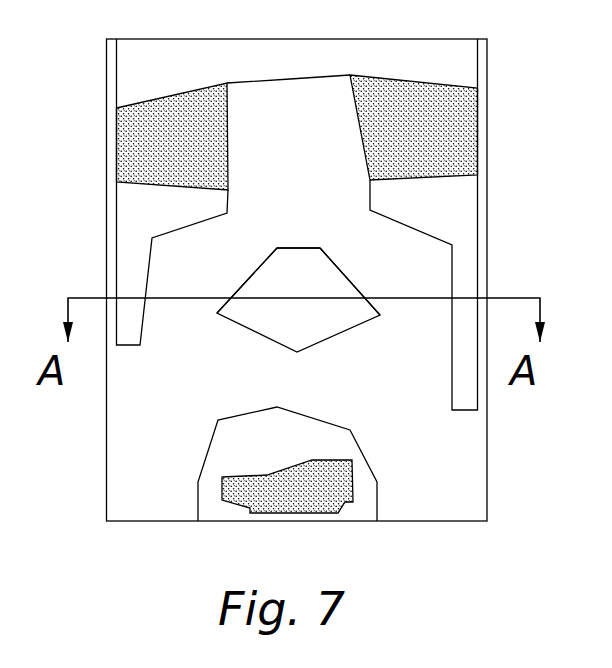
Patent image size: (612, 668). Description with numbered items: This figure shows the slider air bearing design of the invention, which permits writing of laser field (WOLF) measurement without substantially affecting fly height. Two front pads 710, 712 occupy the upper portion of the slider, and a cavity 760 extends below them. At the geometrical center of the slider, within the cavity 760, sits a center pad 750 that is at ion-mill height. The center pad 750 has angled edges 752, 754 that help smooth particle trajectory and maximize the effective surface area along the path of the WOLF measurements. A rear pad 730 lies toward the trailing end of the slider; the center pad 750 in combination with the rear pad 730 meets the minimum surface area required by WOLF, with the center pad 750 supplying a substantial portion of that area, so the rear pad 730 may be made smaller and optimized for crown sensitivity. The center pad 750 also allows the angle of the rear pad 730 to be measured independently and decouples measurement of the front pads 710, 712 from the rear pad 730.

The front pad 710 is at (140, 102).
The front pad 712 is at (447, 85).
The rear pad 730 is at (348, 507).
The center pad 750 is at (345, 330).
The angled edge 752 is at (343, 270).
The angled edge 754 is at (248, 273).
The cavity 760 is at (303, 233).